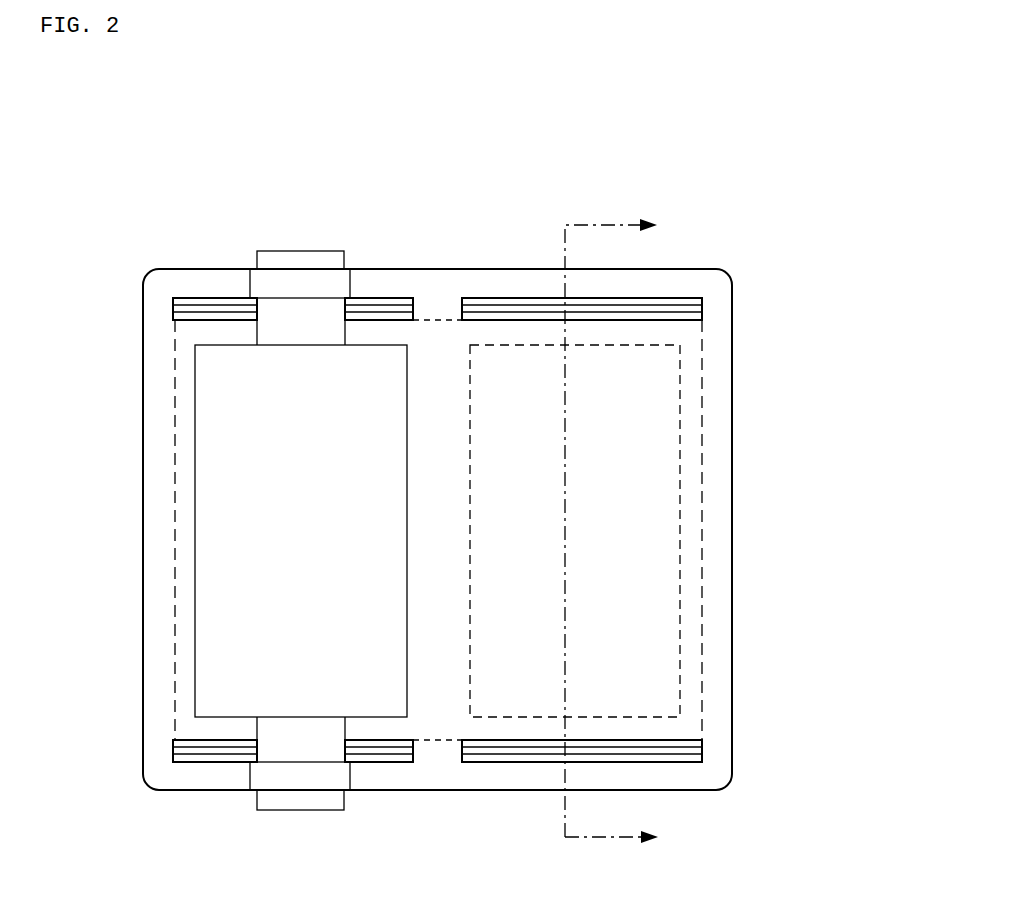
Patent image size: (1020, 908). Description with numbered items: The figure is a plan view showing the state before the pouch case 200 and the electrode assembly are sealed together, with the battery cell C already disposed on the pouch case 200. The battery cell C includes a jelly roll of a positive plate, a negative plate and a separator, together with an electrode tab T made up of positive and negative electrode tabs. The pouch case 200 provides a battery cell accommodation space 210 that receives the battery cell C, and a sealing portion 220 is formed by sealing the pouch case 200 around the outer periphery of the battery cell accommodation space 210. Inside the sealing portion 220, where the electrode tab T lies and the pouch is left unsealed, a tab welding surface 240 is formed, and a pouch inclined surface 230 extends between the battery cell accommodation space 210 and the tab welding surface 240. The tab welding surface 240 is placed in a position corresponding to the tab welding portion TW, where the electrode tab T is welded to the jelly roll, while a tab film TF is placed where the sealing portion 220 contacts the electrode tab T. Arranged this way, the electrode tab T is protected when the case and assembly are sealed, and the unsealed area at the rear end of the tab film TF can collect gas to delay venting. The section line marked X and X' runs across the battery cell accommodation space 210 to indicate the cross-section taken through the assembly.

The pouch case 200 is at (776, 113).
The battery cell accommodation space 210 is at (666, 497).
The sealing portion 220 is at (718, 417).
The pouch inclined surface 230 is at (182, 334).
The tab welding surface 240 is at (513, 298).
The battery cell C is at (186, 515).
The electrode tab T is at (302, 262).
The tab welding portion TW is at (272, 300).
The tab film TF is at (343, 280).
The section line X is at (620, 515).
The section line X' is at (624, 849).